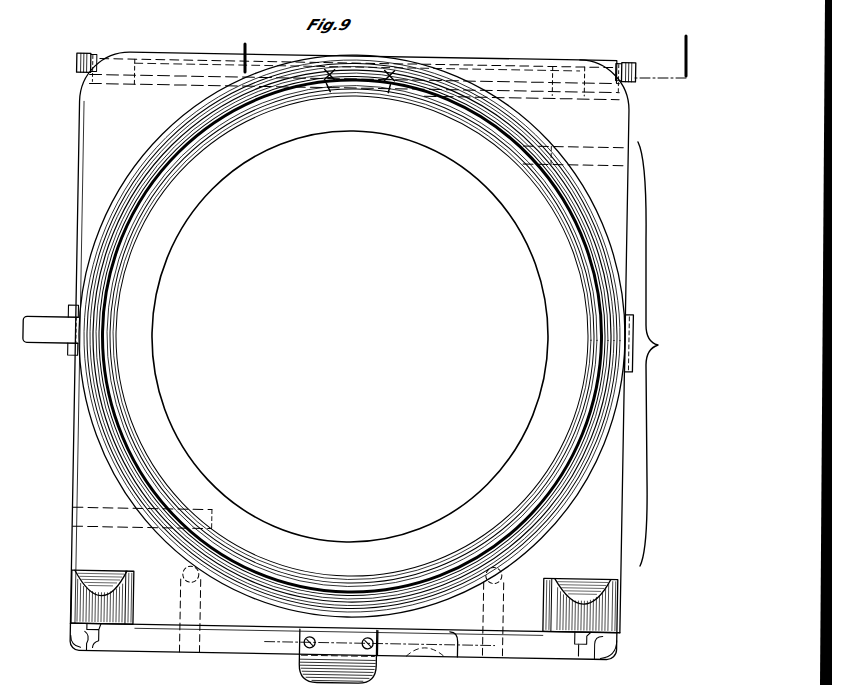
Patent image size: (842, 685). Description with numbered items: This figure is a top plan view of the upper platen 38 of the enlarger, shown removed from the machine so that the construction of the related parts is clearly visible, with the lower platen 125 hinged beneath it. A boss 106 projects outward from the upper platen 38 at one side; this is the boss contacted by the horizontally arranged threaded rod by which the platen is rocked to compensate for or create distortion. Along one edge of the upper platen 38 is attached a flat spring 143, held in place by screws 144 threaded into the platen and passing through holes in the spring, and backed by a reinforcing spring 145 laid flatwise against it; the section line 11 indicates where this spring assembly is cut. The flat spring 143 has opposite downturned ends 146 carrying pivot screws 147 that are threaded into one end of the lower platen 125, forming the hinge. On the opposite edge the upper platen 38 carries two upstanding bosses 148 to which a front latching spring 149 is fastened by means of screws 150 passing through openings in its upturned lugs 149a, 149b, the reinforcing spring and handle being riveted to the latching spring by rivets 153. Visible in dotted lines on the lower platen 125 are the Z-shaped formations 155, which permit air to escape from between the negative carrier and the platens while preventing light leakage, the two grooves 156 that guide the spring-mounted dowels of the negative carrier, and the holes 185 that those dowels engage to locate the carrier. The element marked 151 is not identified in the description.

The section line 11- 11 is at (468, 47).
The upper platen 38 is at (655, 354).
The boss 106 is at (43, 322).
The lower platen 125 is at (620, 655).
The flat spring 143 is at (610, 68).
The screws 144 is at (322, 92).
The reinforcing spring 145 is at (202, 62).
The downturned ends 146 is at (88, 56).
The pivot screws 147 is at (72, 68).
The upstanding bosses 148 is at (76, 605).
The front latching spring 149 is at (536, 648).
The upturned lug 149a is at (90, 650).
The upturned lug 149b is at (624, 646).
The screws 150 is at (102, 650).
The spacer 151 is at (462, 648).
The rivets 153 is at (311, 648).
The Z-shaped formations 155 is at (593, 147).
The grooves 156 is at (200, 607).
The holes 185 is at (188, 572).